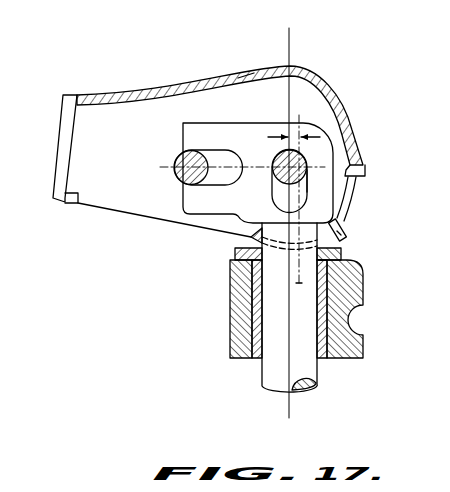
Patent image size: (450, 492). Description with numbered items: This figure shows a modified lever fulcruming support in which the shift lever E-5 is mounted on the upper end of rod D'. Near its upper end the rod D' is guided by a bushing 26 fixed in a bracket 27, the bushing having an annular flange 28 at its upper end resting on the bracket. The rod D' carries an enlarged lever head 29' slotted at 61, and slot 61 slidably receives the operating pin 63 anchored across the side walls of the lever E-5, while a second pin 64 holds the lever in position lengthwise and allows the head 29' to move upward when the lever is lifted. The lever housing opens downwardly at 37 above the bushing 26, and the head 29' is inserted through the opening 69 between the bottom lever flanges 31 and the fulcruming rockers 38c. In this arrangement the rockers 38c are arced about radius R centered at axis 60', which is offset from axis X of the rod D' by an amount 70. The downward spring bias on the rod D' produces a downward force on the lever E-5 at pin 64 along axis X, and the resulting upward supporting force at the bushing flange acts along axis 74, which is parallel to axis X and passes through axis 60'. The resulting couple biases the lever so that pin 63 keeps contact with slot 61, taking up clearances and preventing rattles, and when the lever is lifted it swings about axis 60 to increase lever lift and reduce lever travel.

The axis X— X is at (288, 222).
The shift lever E-5 is at (125, 96).
The lever head 29' is at (251, 61).
The opening 37 is at (365, 174).
The bottom terminal flanges 31 is at (64, 205).
The opening 69 is at (116, 215).
The slot 61 is at (222, 145).
The operating pin 63 is at (174, 164).
The axis 60 is at (263, 181).
The axis 60' is at (350, 158).
The second pin 64 is at (274, 151).
The offset amount 70 is at (302, 134).
The fulcruming rockers 38c is at (349, 239).
The radius R is at (333, 227).
The rod D' is at (260, 307).
The annular flange 28 is at (233, 252).
The bracket 27 is at (238, 296).
The bushing 26 is at (255, 333).
The axis 74 is at (302, 281).